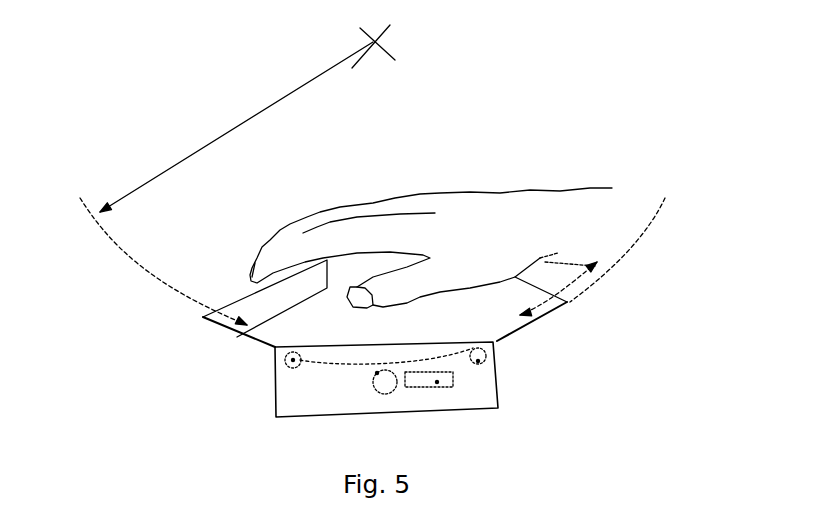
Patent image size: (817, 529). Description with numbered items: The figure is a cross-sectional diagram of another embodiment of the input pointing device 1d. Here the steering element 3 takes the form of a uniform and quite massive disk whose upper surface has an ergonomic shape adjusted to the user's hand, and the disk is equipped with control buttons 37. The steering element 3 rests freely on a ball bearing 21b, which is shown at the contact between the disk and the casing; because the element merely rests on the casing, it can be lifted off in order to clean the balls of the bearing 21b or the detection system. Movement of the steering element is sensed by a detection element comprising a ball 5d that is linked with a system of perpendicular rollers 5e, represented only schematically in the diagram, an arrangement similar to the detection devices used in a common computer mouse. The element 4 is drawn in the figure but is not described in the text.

The input pointing device 1d is at (215, 402).
The steering element 3 is at (485, 315).
The pivotable operating surface 4 is at (102, 228).
The control buttons 37 is at (252, 307).
The ball bearing 21b is at (293, 360).
The ball 5d is at (377, 373).
The perpendicular rollers 5e is at (437, 382).